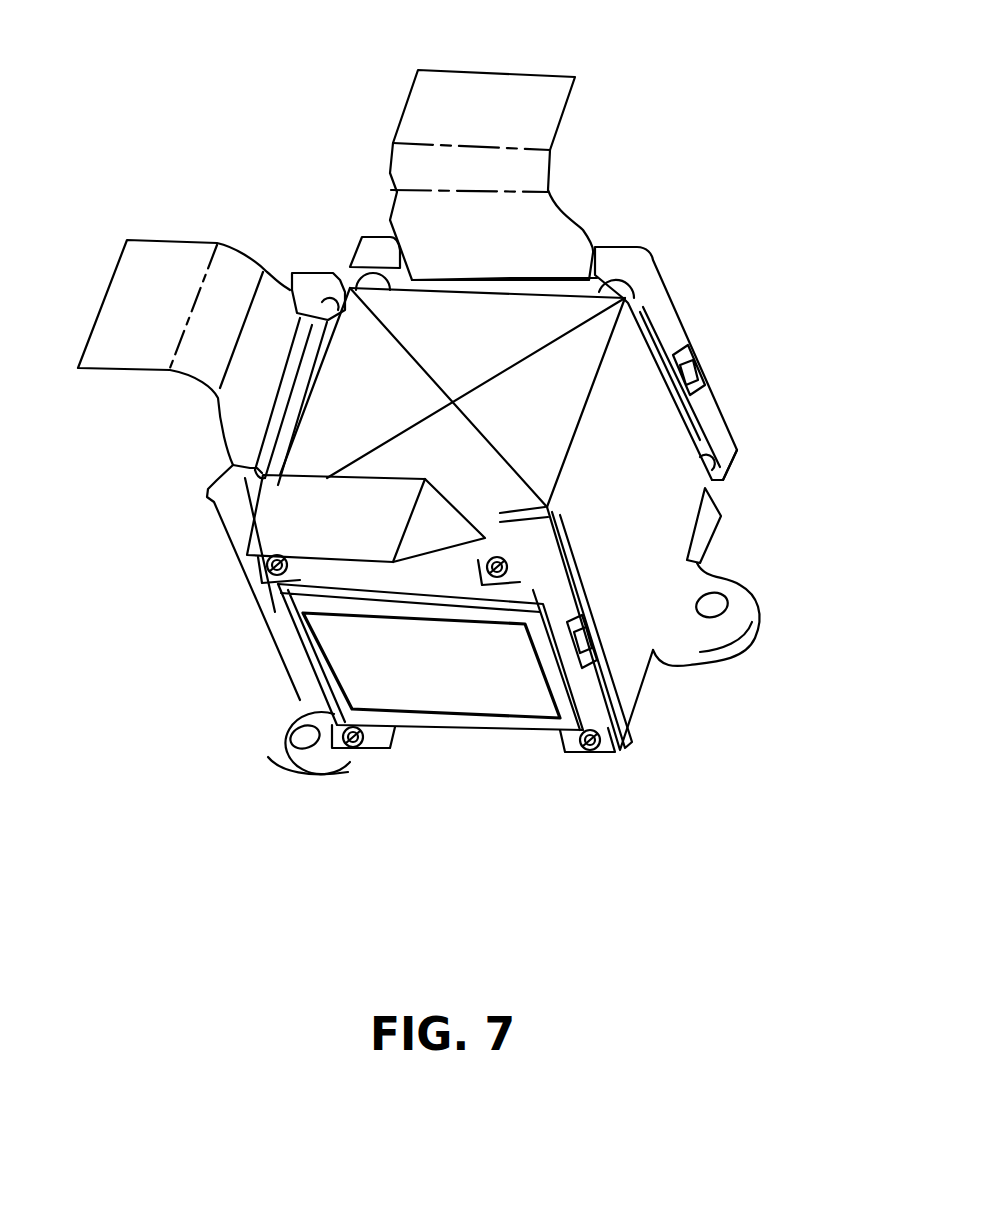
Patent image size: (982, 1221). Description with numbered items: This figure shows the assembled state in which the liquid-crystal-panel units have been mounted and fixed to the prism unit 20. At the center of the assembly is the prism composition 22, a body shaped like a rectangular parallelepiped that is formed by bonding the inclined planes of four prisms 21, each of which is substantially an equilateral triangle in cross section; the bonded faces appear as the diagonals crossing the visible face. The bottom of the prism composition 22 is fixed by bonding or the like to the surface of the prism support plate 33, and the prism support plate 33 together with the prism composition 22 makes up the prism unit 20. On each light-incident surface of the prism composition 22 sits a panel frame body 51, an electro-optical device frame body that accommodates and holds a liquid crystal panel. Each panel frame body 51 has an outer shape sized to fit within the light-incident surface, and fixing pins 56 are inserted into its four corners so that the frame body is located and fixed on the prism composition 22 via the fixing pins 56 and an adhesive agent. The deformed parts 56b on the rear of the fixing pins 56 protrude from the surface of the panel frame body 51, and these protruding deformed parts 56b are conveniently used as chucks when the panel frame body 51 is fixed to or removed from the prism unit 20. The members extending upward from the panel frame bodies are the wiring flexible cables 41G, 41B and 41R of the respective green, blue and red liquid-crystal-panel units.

The prism unit 20 is at (835, 440).
The prism 21 is at (454, 463).
The prism composition 22 is at (678, 483).
The prism support plate 33 is at (705, 535).
The wiring flexible cable 41B is at (509, 96).
The wiring flexible cable 41G is at (128, 292).
The wiring flexible cable 41R is at (297, 520).
The panel frame body 51 is at (306, 273).
The fixing pin 56 is at (268, 567).
The deformed part 56b is at (270, 600).